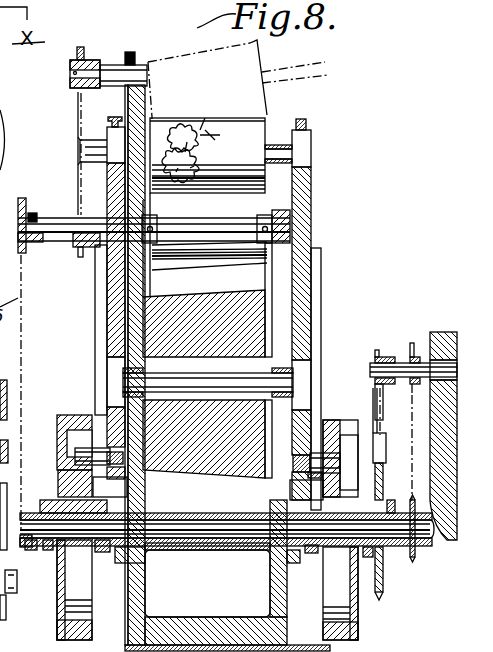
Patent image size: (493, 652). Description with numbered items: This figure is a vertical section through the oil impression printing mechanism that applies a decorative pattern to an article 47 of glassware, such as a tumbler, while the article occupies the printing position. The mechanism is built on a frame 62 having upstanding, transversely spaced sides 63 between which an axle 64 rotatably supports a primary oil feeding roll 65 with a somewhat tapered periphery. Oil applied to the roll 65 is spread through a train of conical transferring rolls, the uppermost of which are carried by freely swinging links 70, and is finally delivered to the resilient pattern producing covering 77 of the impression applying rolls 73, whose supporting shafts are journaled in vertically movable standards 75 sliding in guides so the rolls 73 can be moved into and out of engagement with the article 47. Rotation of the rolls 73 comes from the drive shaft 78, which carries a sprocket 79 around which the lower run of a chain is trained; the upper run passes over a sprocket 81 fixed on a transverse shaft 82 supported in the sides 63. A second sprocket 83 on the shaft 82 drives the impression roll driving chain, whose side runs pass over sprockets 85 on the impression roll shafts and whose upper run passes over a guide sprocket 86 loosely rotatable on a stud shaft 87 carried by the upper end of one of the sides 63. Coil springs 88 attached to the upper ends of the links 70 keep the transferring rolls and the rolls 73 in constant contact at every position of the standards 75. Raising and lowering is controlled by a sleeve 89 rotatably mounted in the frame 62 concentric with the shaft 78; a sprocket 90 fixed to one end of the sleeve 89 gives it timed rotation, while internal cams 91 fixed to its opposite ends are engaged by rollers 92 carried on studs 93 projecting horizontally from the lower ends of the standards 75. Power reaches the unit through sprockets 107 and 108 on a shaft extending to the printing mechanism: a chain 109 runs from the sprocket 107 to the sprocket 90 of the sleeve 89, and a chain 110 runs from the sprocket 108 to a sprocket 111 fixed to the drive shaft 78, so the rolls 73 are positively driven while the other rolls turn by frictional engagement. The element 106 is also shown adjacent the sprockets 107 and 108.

The article 47 is at (184, 52).
The frame 62 is at (270, 580).
The sides 63 is at (0, 63).
The axle 64 is at (132, 381).
The primary oil feeding roll 65 is at (247, 337).
The links 70 is at (0, 607).
The impression applying rolls 73 is at (268, 127).
The standards 75 is at (311, 303).
The resilient pattern producing covering 77 is at (214, 124).
The drive shaft 78 is at (208, 527).
The sprocket 79 is at (22, 548).
The sprocket 81 is at (30, 216).
The transverse shaft 82 is at (55, 234).
The second sprocket 83 is at (76, 247).
The sprockets 85 is at (107, 150).
The guide sprocket 86 is at (88, 62).
The stud shaft 87 is at (110, 66).
The coil springs 88 is at (7, 508).
The sleeve 89 is at (223, 514).
The sprocket 90 is at (384, 570).
The internal cams 91 is at (66, 414).
The rollers 92 is at (80, 481).
The studs 93 is at (78, 457).
The block 106 is at (445, 340).
The sprocket 107 is at (378, 355).
The sprocket 108 is at (412, 343).
The chain 109 is at (374, 401).
The chain 110 is at (412, 473).
The sprocket 111 is at (417, 543).